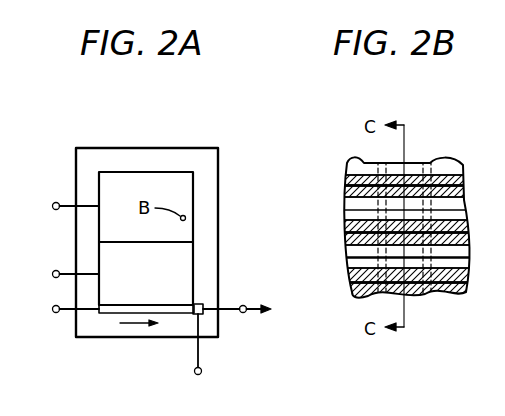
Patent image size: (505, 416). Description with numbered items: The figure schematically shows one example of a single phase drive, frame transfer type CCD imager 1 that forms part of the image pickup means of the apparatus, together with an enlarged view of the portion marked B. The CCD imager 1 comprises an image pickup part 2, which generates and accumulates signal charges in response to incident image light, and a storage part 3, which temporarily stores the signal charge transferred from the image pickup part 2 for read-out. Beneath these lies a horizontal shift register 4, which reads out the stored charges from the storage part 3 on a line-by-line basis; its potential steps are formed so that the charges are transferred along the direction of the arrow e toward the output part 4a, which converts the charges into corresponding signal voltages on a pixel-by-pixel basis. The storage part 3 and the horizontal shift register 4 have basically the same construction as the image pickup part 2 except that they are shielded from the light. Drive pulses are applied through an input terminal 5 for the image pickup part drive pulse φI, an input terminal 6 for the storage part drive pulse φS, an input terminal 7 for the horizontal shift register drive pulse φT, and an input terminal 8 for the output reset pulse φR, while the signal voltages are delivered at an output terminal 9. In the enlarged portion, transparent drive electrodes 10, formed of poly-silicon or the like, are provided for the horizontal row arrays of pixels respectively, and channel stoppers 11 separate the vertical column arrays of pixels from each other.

In FIG. 2A, the CCD imager 1 is at (204, 158).
In FIG. 2A, the image pickup part 2 is at (140, 172).
In FIG. 2A, the storage part 3 is at (184, 268).
In FIG. 2A, the horizontal shift register 4 is at (168, 313).
In FIG. 2A, the output part 4a is at (200, 305).
In FIG. 2A, the input terminal 5 is at (57, 200).
In FIG. 2A, the input terminal 6 is at (56, 268).
In FIG. 2A, the input terminal 7 is at (57, 316).
In FIG. 2A, the input terminal 8 is at (206, 371).
In FIG. 2A, the output terminal 9 is at (248, 316).
In FIG. 2B, the transparent drive electrodes 10 is at (447, 178).
In FIG. 2B, the channel stoppers 11 is at (376, 168).